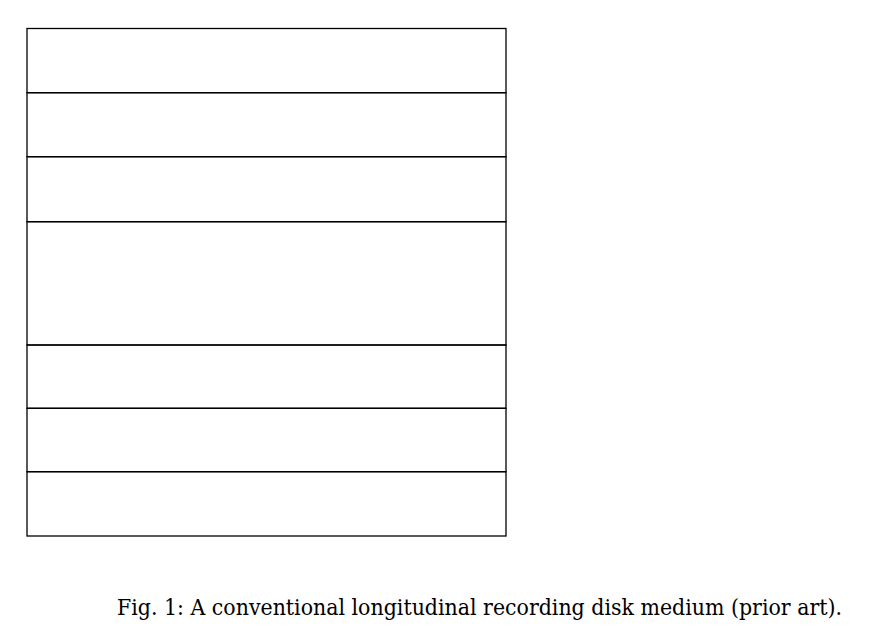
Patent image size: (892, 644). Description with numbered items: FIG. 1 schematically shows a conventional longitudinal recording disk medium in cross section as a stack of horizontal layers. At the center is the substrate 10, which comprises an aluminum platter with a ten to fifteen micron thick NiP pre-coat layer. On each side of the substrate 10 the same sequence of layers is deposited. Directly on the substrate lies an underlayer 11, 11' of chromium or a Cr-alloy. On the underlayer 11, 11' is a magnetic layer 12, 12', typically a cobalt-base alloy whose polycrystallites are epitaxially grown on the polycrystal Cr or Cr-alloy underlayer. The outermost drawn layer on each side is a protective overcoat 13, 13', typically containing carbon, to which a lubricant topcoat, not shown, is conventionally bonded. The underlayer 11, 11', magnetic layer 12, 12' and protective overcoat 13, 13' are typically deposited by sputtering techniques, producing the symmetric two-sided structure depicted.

The substrate 10 is at (520, 298).
The underlayer 11 is at (307, 189).
The magnetic layer 12 is at (307, 125).
The protective overcoat 13 is at (307, 61).
The underlayer 11' is at (311, 376).
The magnetic layer 12' is at (311, 439).
The protective overcoat 13' is at (311, 504).